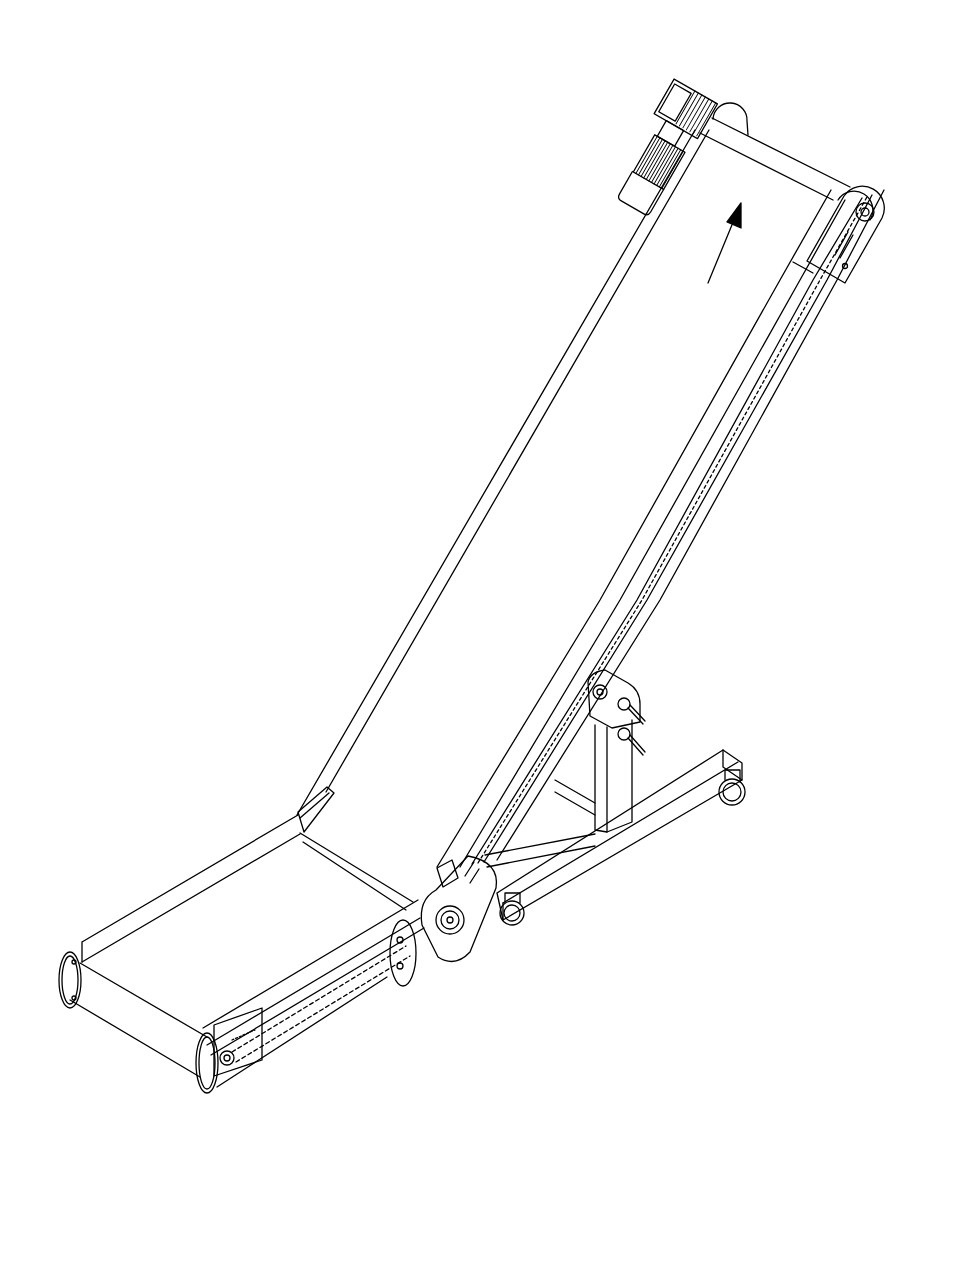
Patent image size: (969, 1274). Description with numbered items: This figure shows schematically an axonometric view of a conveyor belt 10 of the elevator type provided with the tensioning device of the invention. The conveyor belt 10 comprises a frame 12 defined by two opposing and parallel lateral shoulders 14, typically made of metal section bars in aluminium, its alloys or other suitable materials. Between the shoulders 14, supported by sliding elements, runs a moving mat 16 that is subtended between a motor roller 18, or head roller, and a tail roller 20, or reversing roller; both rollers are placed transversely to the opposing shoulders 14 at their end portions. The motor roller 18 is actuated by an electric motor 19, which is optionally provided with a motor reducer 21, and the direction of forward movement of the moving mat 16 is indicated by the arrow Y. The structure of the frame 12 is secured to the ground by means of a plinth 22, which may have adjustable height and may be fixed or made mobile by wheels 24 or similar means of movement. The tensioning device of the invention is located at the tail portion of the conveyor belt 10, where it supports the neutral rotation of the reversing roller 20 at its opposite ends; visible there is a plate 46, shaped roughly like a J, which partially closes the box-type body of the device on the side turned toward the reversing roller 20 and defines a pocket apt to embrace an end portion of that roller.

The conveyor belt 10 is at (336, 444).
The frame 12 is at (698, 547).
The lateral shoulders 14 is at (546, 383).
The moving mat 16 is at (445, 760).
The motor roller 18 is at (881, 200).
The electric motor 19 is at (633, 167).
The tail roller 20 is at (150, 1015).
The motor reducer 21 is at (683, 80).
The plinth 22 is at (638, 776).
The wheels 24 is at (748, 790).
The plate 46 is at (78, 1003).